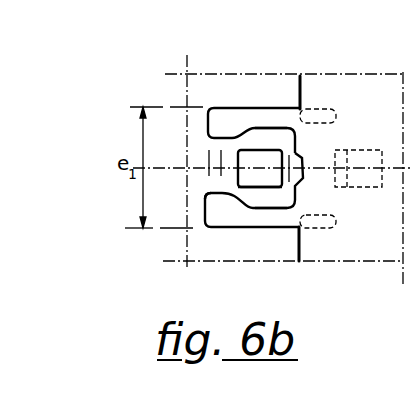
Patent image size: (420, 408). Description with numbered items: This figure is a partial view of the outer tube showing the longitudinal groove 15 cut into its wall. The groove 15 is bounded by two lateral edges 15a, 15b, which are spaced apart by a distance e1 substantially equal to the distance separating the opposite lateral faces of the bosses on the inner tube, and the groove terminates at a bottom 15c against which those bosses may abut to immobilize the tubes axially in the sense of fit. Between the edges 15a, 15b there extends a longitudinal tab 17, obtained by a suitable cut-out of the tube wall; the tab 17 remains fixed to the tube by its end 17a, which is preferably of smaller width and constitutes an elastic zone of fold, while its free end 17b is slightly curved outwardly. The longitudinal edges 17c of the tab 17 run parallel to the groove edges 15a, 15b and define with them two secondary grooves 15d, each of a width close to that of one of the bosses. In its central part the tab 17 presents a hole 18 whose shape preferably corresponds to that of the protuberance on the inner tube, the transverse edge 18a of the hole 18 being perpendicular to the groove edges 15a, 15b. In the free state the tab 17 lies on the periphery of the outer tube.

The longitudinal groove 15 is at (309, 147).
The lateral edge of groove 15a is at (233, 230).
The lateral edge of groove 15b is at (248, 108).
The bottom of groove 15c is at (208, 126).
The secondary groove 15d is at (270, 117).
The longitudinal tab 17 is at (262, 198).
The end of tab 17a is at (210, 192).
The free end of tab 17b is at (302, 176).
The longitudinal edge of tab 17c is at (281, 123).
The hole 18 is at (250, 160).
The transverse edge of hole 18a is at (282, 176).